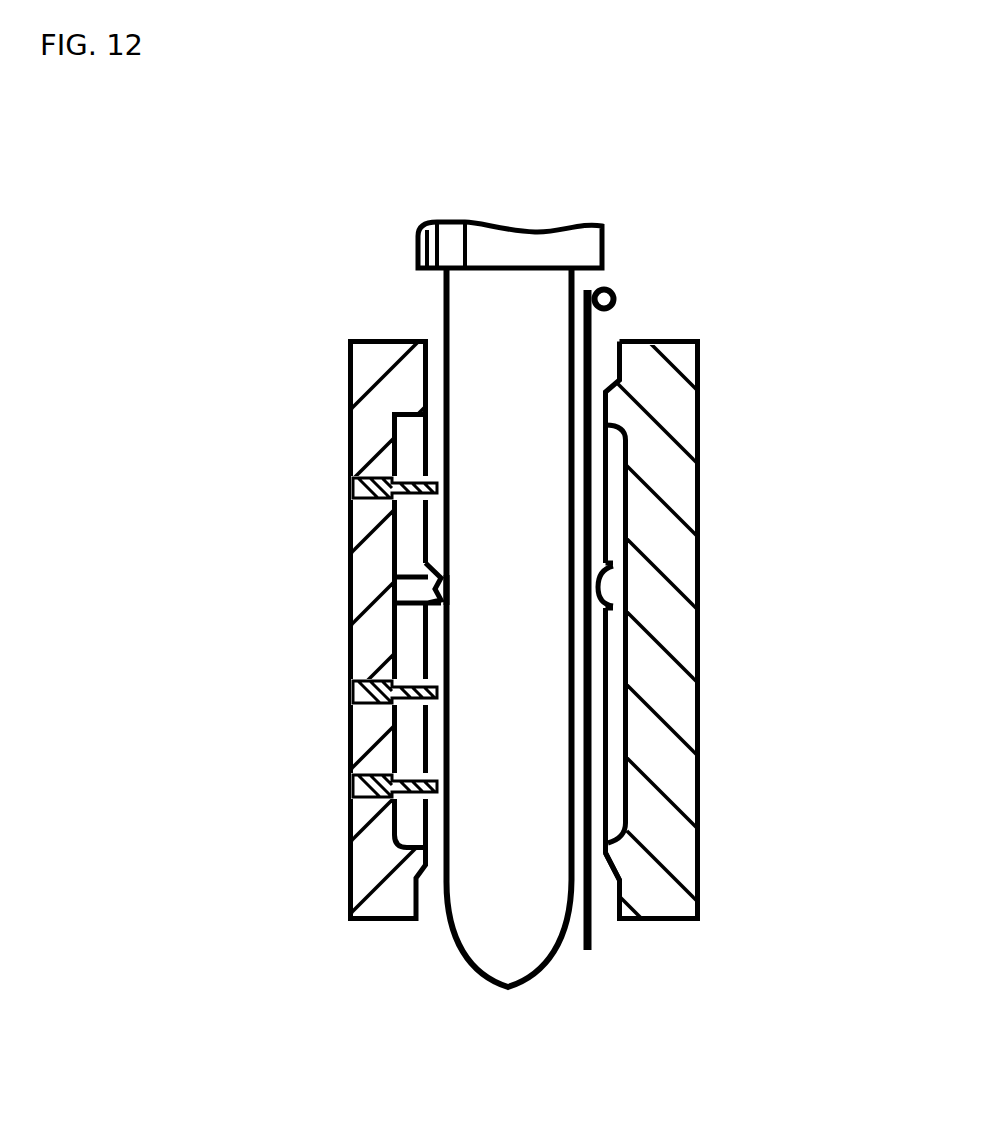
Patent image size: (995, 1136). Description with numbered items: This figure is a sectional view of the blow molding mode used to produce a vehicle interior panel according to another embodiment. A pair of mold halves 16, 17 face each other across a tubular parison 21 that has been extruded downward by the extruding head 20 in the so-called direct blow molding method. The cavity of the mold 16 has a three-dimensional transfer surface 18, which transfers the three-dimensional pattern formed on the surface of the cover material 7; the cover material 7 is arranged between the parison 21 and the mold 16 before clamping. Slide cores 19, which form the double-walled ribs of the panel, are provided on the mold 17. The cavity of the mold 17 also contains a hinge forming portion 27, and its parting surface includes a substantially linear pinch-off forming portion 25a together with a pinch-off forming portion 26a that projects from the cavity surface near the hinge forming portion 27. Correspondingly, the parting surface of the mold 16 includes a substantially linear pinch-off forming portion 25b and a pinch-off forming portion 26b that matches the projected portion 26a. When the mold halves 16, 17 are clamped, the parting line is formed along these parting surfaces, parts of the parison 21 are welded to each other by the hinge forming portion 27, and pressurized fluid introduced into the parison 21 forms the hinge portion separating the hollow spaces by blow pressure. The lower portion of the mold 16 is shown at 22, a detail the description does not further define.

The cover material 7 is at (596, 320).
The mold half 16 is at (680, 557).
The mold half 17 is at (365, 590).
The three-dimensional transfer surface 18 is at (619, 672).
The slide cores 19 is at (365, 488).
The extruding head 20 is at (603, 240).
The parison 21 is at (443, 300).
The bottom portion 22 is at (602, 866).
The pinch-off forming portion 25a is at (430, 436).
The pinch-off forming portion 25b is at (612, 478).
The pinch-off forming portion 26a is at (452, 562).
The pinch-off forming portion 26b is at (608, 586).
The hinge forming portion 27 is at (452, 588).